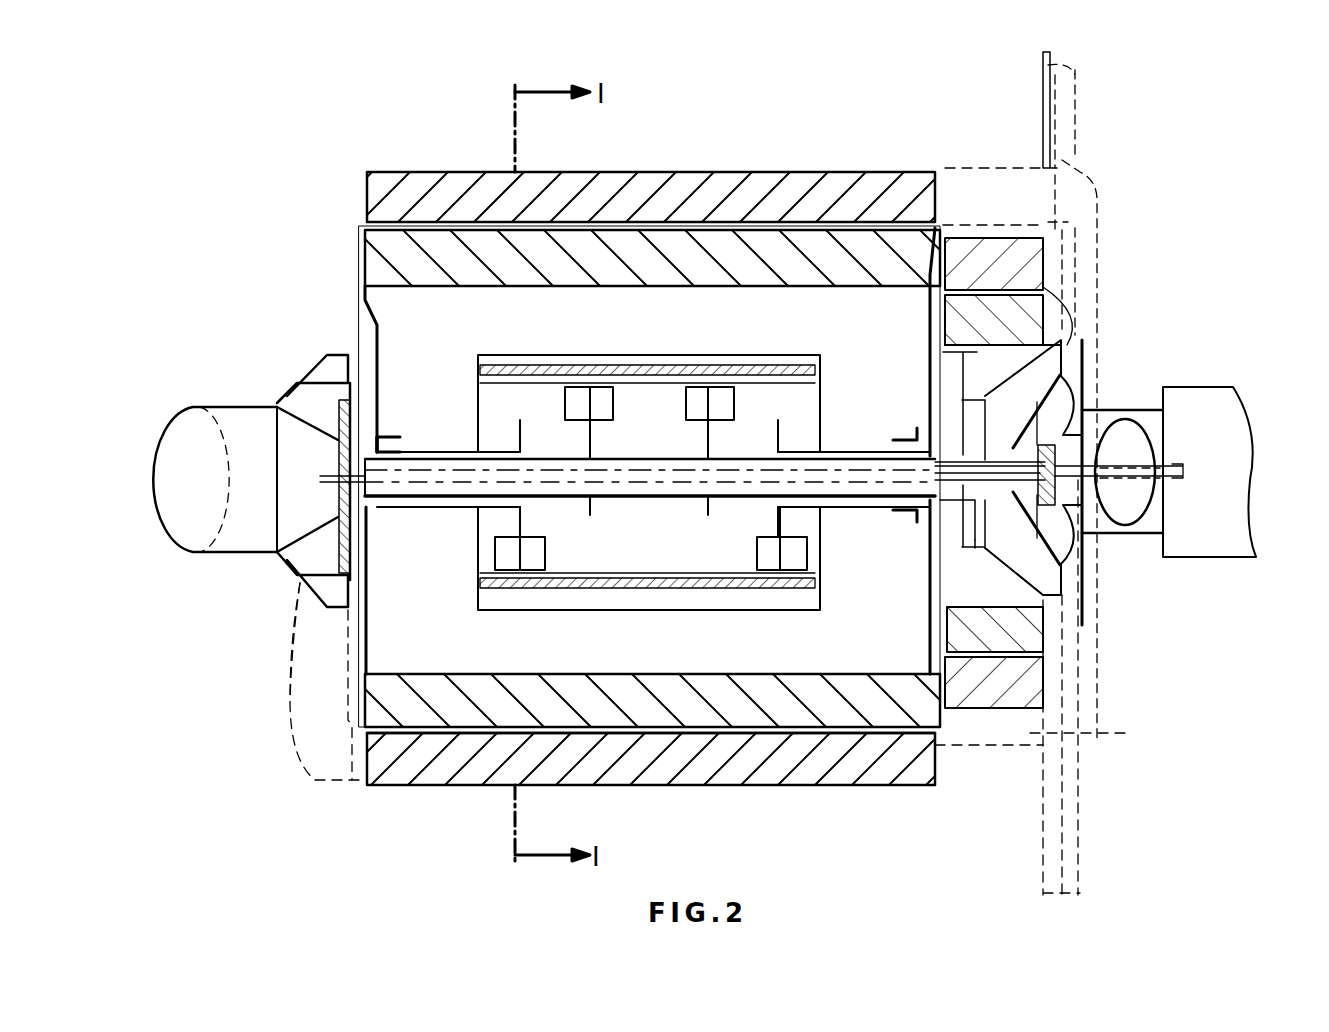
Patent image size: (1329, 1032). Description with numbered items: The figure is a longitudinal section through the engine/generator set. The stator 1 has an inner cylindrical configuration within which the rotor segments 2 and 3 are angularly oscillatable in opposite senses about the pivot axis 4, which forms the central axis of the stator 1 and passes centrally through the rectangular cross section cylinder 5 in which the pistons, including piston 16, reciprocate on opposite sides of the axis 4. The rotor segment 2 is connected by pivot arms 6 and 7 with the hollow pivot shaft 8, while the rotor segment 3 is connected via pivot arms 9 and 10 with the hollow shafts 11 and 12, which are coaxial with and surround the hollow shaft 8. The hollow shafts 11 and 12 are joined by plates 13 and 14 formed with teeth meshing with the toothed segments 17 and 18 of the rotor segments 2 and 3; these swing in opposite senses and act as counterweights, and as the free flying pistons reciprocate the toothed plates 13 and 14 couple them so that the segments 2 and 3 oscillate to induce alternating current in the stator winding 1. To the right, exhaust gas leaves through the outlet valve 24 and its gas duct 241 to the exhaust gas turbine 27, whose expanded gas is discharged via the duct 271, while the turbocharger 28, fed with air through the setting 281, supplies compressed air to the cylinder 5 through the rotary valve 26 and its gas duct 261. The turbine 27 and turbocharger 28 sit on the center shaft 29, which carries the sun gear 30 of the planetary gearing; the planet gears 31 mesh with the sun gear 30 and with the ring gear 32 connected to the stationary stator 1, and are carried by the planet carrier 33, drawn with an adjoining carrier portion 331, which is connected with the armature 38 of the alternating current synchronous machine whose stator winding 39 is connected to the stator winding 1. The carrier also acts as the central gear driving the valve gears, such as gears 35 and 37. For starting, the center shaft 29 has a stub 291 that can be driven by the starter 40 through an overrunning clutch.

The stator 1 is at (400, 190).
The rotor segment 2 is at (850, 715).
The rotor segment 3 is at (400, 253).
The pivot axis 4 is at (465, 478).
The cylinder 5 is at (778, 365).
The pivot arm 6 is at (366, 640).
The pivot arm 7 is at (930, 590).
The hollow pivot shaft 8 is at (447, 458).
The pivot arm 9 is at (365, 292).
The pivot arm 10 is at (930, 300).
The hollow shaft 11 is at (420, 440).
The hollow shaft 12 is at (843, 507).
The toothed plate 13 is at (655, 383).
The toothed plate 14 is at (610, 588).
The piston 16 is at (495, 355).
The toothed segment 17 is at (592, 433).
The toothed segment 18 is at (545, 552).
The outlet valve 24 is at (360, 742).
The gas duct 241 is at (300, 683).
The rotary valve 26 is at (970, 165).
The gas duct 261 is at (1082, 260).
The exhaust gas turbine 27 is at (307, 557).
The exhaust duct 271 is at (178, 440).
The turbocharger 28 is at (1070, 545).
The air setting 281 is at (1177, 462).
The center shaft 29 is at (950, 470).
The stub 291 is at (1138, 445).
The sun gear 30 is at (940, 505).
The planet gears 31 is at (945, 545).
The ring gear 32 is at (945, 352).
The planet carrier 33 is at (1035, 372).
The diaphragm 331 is at (1068, 327).
The gear 35 is at (1062, 128).
The gear 37 is at (1080, 740).
The armature 38 is at (1030, 625).
The stator winding 39 is at (1030, 675).
The starter 40 is at (1213, 540).